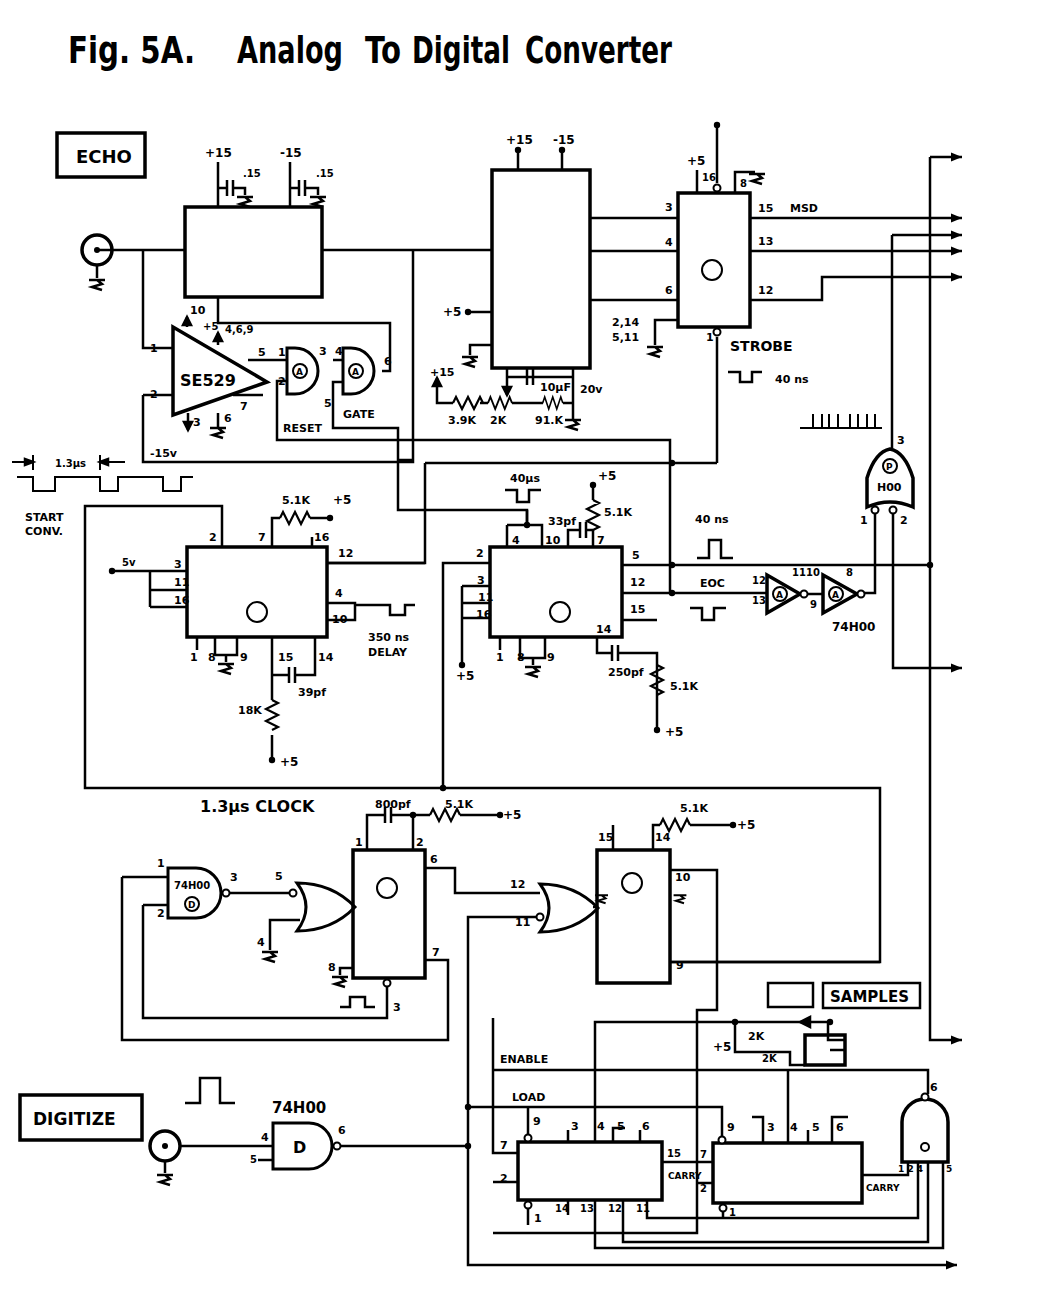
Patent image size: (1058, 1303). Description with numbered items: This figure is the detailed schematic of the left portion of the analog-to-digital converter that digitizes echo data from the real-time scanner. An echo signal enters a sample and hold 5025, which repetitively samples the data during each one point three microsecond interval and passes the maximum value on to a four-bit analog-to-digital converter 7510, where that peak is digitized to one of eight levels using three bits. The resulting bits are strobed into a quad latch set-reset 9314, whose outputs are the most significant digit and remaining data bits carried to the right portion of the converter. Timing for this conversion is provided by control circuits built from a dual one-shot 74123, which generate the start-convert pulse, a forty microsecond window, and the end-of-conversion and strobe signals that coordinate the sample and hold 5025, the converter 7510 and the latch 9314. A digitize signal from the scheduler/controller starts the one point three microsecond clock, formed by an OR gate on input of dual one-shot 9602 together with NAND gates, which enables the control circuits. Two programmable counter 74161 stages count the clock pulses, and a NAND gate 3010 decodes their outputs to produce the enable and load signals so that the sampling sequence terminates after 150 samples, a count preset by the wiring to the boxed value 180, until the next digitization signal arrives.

The sample and hold 5025 is at (253, 252).
The 4-bit analog-to-digital converter 7510 is at (541, 269).
The quad latch set-reset 9314 is at (714, 260).
The dual one-shot 74123 is at (404, 592).
The OR gate on input of dual one-shot 9602 is at (511, 916).
The programmable counter 74161 is at (690, 1172).
The NAND gate 3010 is at (926, 1130).
The samples 150 is at (790, 995).
The sample count 180 is at (825, 1050).